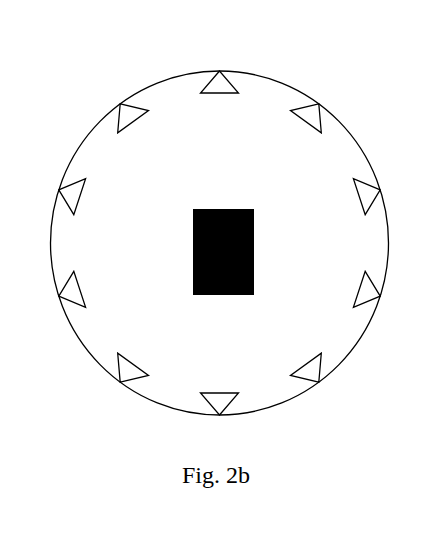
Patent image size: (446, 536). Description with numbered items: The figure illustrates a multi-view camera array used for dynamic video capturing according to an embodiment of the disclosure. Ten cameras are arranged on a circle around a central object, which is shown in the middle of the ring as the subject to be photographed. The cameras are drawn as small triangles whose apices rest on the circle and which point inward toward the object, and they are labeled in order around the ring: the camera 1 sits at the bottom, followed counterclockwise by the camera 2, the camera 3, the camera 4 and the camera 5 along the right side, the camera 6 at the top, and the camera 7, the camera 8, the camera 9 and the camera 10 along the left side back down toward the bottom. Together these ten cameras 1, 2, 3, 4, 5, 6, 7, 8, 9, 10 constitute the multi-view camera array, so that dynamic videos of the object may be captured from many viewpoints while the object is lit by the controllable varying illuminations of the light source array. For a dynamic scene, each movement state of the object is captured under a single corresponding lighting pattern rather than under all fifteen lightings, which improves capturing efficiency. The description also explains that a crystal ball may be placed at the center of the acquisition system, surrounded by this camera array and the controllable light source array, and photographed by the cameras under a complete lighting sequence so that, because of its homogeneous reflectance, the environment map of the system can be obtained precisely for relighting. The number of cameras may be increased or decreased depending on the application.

The camera 1 is at (220, 417).
The camera 2 is at (312, 376).
The camera 3 is at (374, 289).
The camera 4 is at (374, 197).
The camera 5 is at (310, 108).
The camera 6 is at (220, 71).
The camera 7 is at (126, 108).
The camera 8 is at (62, 197).
The camera 9 is at (62, 289).
The camera 10 is at (124, 378).